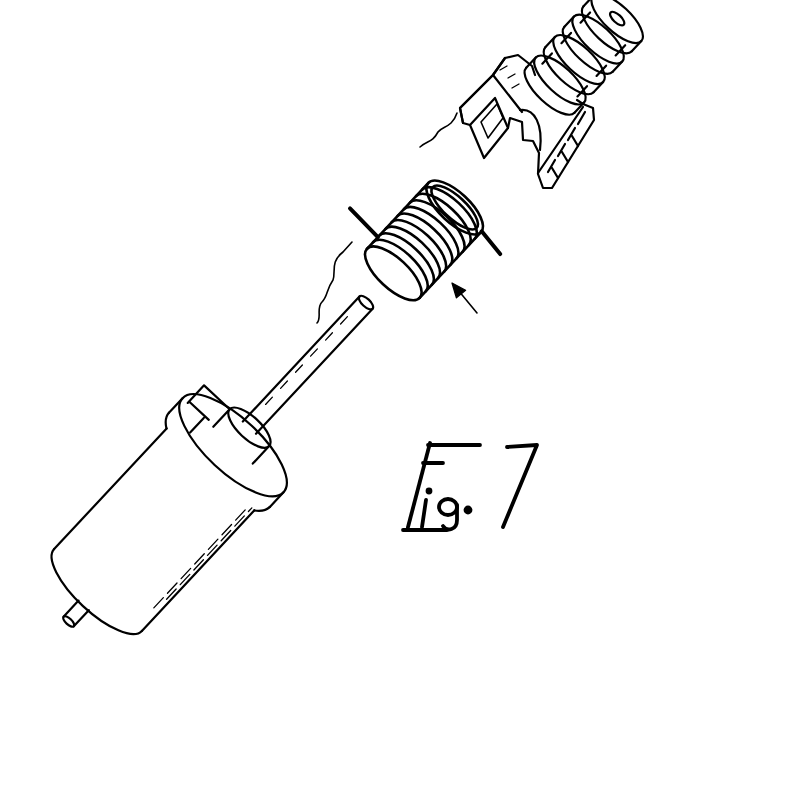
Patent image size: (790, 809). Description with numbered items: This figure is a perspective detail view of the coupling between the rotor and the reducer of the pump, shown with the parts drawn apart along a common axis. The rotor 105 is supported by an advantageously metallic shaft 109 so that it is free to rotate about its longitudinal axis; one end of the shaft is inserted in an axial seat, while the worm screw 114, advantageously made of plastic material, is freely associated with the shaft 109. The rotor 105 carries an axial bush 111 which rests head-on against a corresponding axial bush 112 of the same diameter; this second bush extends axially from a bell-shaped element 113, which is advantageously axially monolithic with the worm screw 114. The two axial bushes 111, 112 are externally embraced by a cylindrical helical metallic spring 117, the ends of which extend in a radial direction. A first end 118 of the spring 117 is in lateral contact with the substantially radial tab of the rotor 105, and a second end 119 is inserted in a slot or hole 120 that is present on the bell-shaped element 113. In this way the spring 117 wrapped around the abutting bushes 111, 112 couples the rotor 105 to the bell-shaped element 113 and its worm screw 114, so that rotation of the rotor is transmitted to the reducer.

The rotor 105 is at (133, 490).
The shaft 109 is at (312, 356).
The axial bush 111 is at (214, 426).
The axial bush 112 is at (520, 140).
The bell-shaped element 113 is at (485, 82).
The worm screw 114 is at (597, 83).
The cylindrical helical metallic spring 117 is at (492, 334).
The first end 118 is at (350, 217).
The second end 119 is at (500, 253).
The slot or hole 120 is at (460, 127).